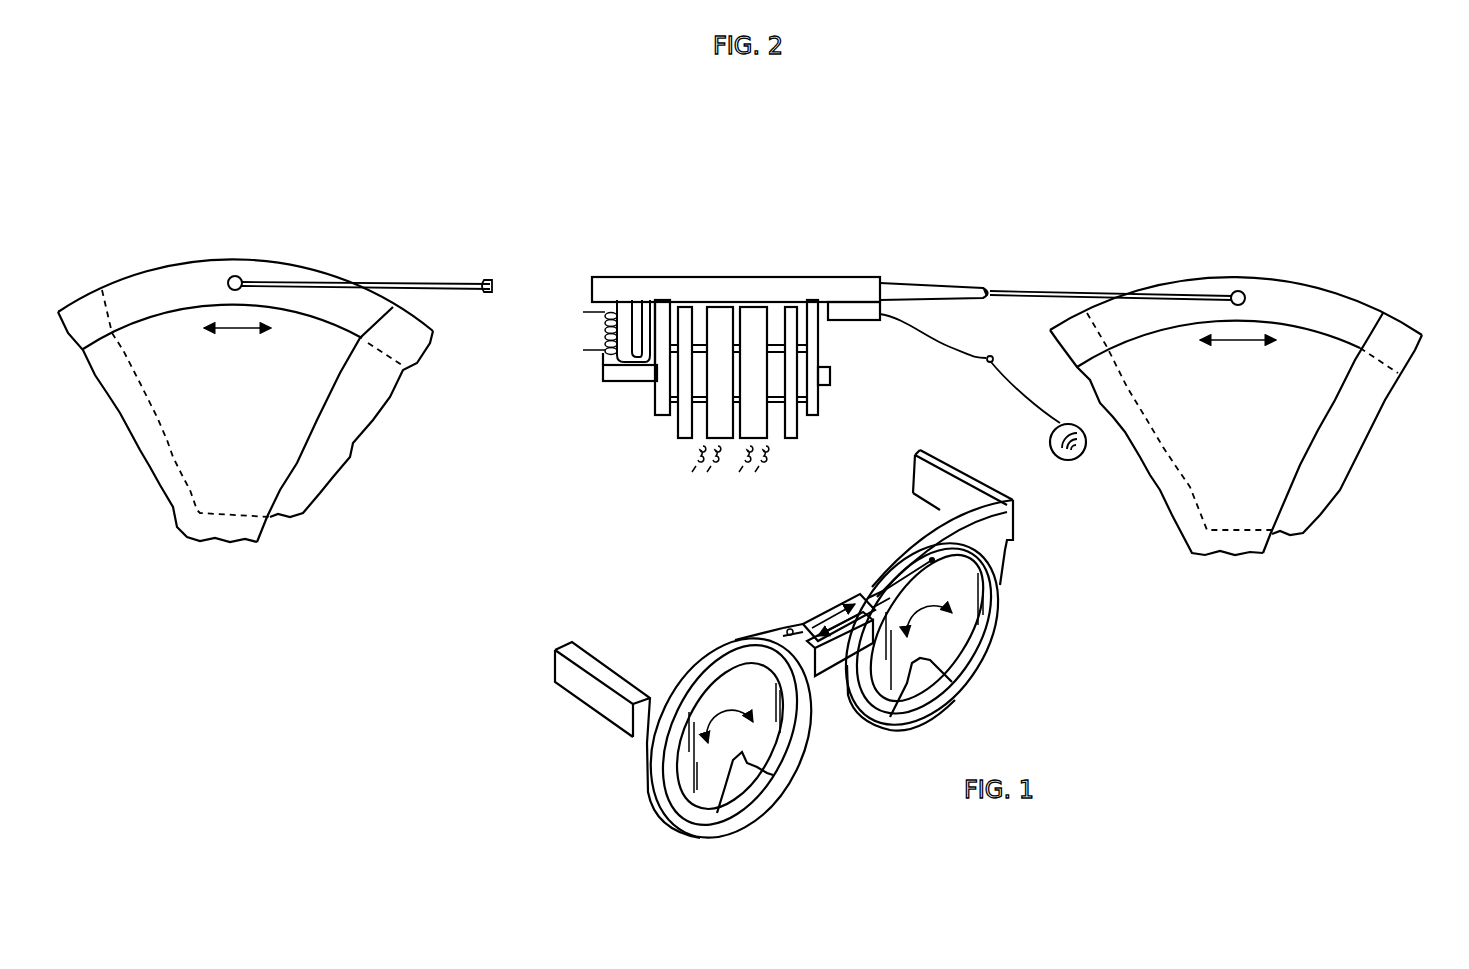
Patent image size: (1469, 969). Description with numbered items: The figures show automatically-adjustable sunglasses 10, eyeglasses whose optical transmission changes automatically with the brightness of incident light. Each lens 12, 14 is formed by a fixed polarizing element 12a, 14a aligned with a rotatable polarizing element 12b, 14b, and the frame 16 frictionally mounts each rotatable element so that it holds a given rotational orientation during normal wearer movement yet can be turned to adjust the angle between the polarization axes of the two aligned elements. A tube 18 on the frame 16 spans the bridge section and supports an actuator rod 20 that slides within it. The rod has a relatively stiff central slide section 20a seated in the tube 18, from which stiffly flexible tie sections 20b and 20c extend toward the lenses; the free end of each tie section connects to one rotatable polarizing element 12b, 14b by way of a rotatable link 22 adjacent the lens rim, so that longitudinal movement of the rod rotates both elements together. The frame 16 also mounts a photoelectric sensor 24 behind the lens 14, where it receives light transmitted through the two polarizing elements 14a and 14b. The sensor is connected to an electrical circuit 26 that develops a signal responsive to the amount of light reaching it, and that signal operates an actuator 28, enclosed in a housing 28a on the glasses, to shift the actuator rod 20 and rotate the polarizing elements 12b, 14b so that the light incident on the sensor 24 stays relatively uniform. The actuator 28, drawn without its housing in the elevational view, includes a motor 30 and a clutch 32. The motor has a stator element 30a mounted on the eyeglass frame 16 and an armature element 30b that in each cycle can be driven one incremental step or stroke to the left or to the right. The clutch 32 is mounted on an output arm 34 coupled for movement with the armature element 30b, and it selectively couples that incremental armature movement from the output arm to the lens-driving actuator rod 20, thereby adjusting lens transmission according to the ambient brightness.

In FIG. 1, the automatically-adjustable sunglasses 10 is at (759, 601).
In FIG. 1, the lens 12 is at (715, 738).
In FIG. 2, the fixed polarizing element 12a is at (350, 450).
In FIG. 1, the fixed polarizing element 12a is at (740, 792).
In FIG. 2, the rotatable polarizing element 12b is at (303, 462).
In FIG. 1, the rotatable polarizing element 12b is at (703, 797).
In FIG. 1, the lens 14 is at (929, 634).
In FIG. 2, the fixed polarizing element 14a is at (1350, 450).
In FIG. 1, the fixed polarizing element 14a is at (920, 697).
In FIG. 2, the rotatable polarizing element 14b is at (1307, 473).
In FIG. 1, the rotatable polarizing element 14b is at (960, 653).
In FIG. 1, the frame 16 is at (693, 665).
In FIG. 2, the tube 18 is at (762, 277).
In FIG. 1, the tube 18 is at (835, 607).
In FIG. 2, the actuator rod 20 is at (928, 280).
In FIG. 1, the actuator rod 20 is at (875, 587).
In FIG. 2, the central slide section 20a is at (962, 302).
In FIG. 2, the tie section 20b is at (448, 283).
In FIG. 2, the tie section 20c is at (1052, 288).
In FIG. 2, the pivot pin 22 is at (240, 278).
In FIG. 2, the photoelectric sensor 24 is at (1050, 441).
In FIG. 2, the electrical circuit 26 is at (848, 322).
In FIG. 2, the actuator 28 is at (732, 397).
In FIG. 1, the actuator 28 is at (840, 679).
In FIG. 1, the housing 28a is at (840, 644).
In FIG. 2, the motor 30 is at (710, 397).
In FIG. 2, the stator element 30a is at (698, 442).
In FIG. 2, the armature element 30b is at (777, 408).
In FIG. 2, the clutch 32 is at (600, 358).
In FIG. 2, the output arm 34 is at (613, 377).